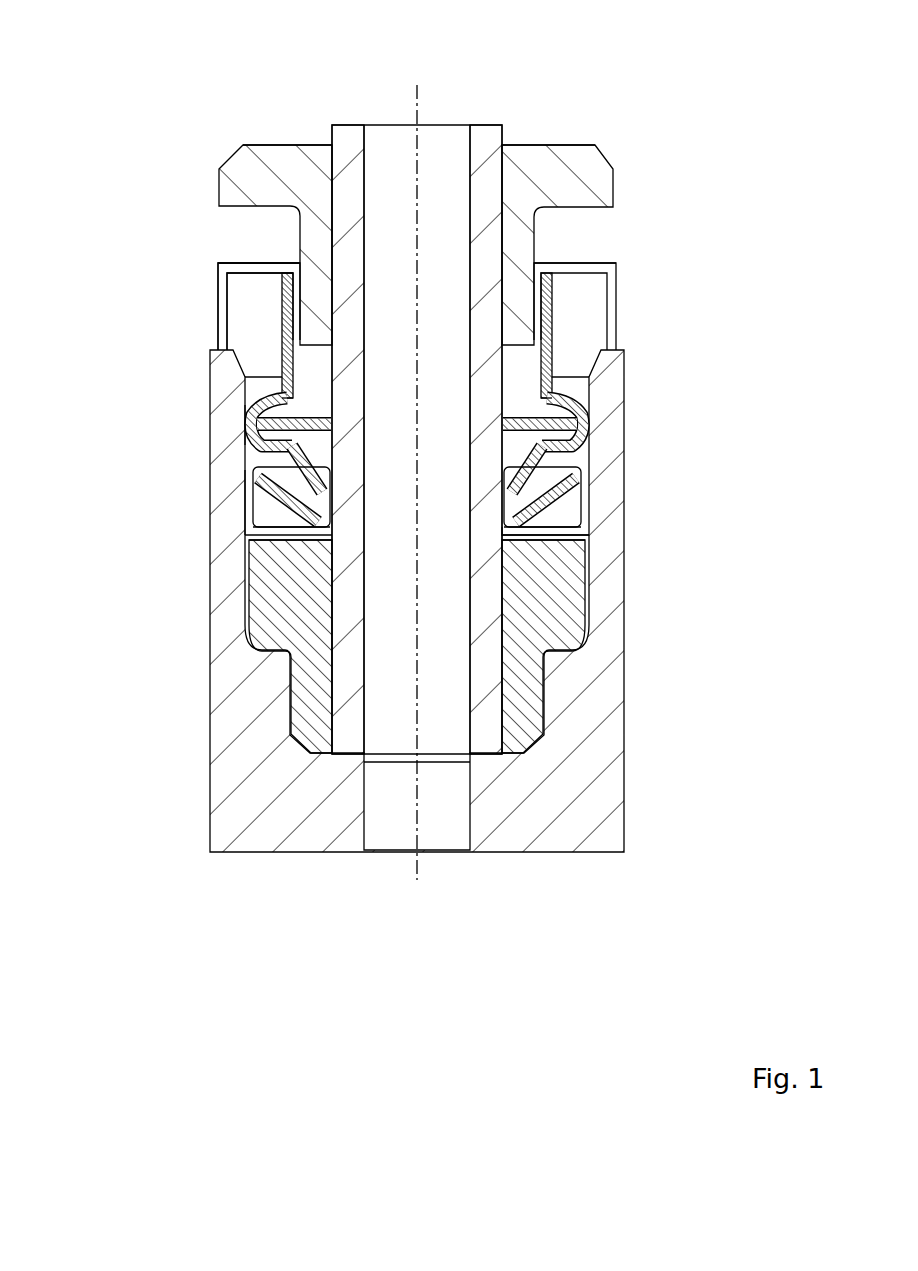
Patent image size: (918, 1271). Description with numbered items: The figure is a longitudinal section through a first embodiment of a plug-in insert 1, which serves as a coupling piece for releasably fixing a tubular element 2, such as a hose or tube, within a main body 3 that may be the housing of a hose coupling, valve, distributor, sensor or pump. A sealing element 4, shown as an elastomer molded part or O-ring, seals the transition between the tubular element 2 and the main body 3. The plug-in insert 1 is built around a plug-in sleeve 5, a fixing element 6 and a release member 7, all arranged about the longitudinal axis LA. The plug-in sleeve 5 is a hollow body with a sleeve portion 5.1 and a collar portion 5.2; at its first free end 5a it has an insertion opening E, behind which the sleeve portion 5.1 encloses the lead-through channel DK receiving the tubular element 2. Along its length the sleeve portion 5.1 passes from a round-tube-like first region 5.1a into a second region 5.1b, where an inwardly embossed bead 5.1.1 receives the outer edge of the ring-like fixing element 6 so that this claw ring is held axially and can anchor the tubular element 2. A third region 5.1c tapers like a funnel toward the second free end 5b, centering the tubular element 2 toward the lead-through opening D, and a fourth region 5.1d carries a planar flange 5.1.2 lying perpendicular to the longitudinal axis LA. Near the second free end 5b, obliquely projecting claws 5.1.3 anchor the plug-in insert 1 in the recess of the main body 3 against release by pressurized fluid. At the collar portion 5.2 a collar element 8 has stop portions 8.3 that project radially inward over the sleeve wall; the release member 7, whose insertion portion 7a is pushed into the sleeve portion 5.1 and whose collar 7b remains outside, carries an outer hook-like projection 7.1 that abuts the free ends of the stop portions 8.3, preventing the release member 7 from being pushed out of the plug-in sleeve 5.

The plug-in insert 1 is at (708, 78).
The tubular element 2 is at (347, 125).
The lead-through channel DK is at (326, 166).
The longitudinal axis LA is at (413, 880).
The main body 3 is at (210, 847).
The sealing element 4 is at (265, 655).
The lead-through opening D is at (305, 545).
The plug-in sleeve 5 is at (398, 420).
The first free end 5a is at (258, 249).
The second free end 5b is at (556, 547).
The sleeve portion 5.1 is at (580, 354).
The first region 5.1a is at (282, 345).
The second region 5.1b is at (229, 433).
The third region 5.1c is at (258, 465).
The fourth region 5.1d is at (228, 525).
The bead 5.1.1 is at (311, 405).
The flange 5.1.2 is at (241, 539).
The claws 5.1.3 is at (255, 488).
The collar portion 5.2 is at (636, 322).
The fixing element 6 is at (550, 428).
The release member 7 is at (610, 190).
The insertion portion 7a is at (553, 323).
The collar 7b is at (558, 145).
The projection 7.1 is at (272, 372).
The collar element 8 is at (218, 318).
The stop portions 8.3 is at (282, 300).
The insertion opening E is at (551, 253).